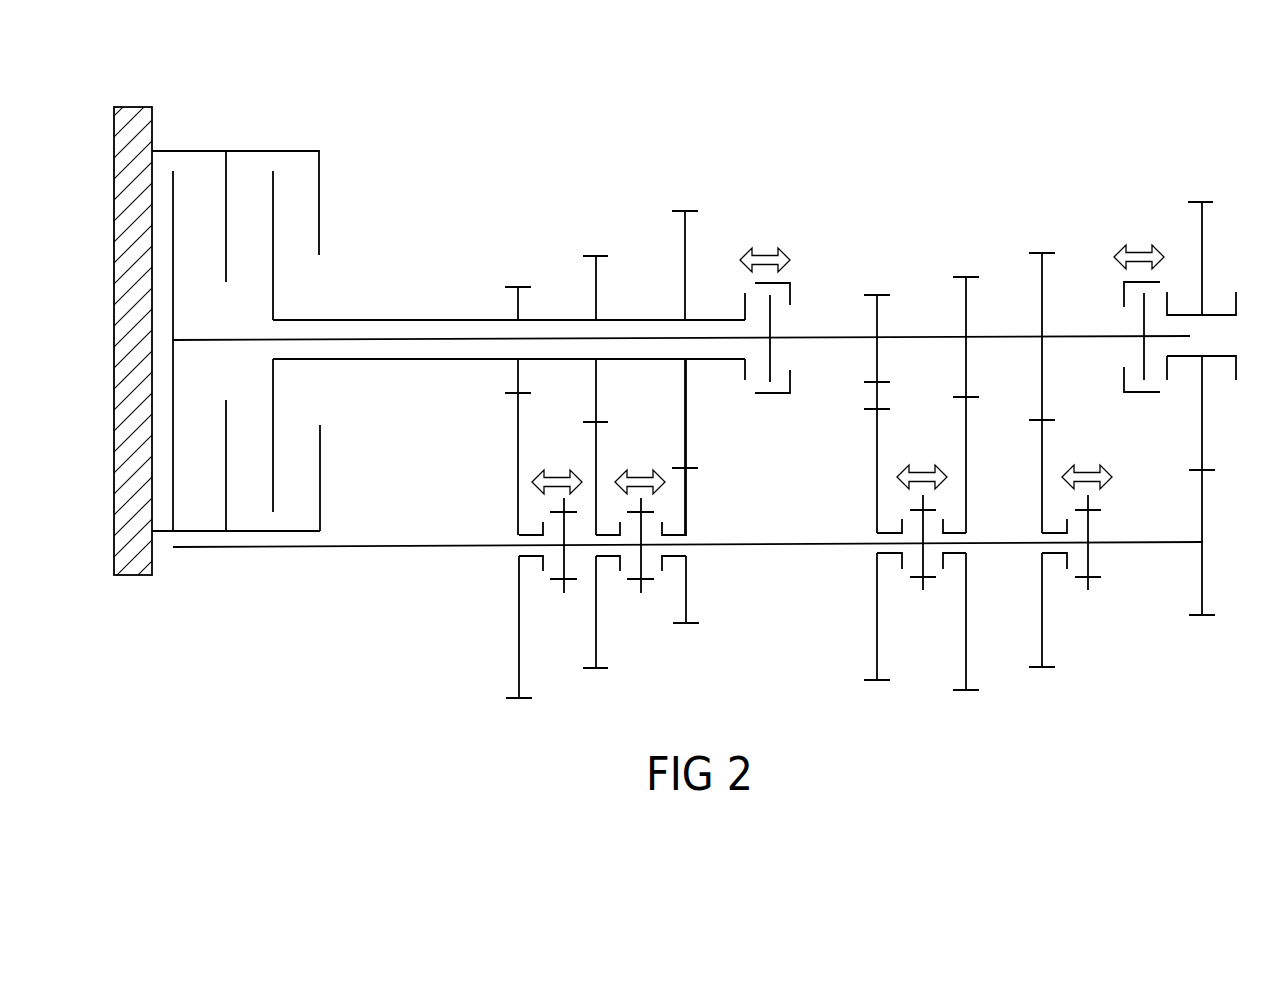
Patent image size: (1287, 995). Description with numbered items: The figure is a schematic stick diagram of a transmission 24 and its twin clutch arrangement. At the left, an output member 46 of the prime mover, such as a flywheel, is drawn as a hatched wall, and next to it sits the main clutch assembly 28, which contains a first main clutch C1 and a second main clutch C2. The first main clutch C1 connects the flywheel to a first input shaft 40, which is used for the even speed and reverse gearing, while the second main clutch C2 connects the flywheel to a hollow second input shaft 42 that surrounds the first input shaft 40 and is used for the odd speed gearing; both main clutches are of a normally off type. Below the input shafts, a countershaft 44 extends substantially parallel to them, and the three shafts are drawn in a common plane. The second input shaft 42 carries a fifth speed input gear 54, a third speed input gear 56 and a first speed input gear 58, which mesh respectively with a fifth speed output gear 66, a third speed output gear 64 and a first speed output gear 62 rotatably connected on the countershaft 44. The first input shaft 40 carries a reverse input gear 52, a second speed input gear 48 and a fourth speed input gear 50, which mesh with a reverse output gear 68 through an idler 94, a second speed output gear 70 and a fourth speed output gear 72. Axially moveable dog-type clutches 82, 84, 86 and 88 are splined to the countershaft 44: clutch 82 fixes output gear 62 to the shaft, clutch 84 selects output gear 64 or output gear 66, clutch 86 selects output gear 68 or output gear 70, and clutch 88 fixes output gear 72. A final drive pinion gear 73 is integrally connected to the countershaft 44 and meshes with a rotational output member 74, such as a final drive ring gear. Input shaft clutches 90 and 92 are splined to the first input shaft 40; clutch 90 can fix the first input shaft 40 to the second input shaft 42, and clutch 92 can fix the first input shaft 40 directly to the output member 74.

The transmission 24 is at (1003, 175).
The main clutch assembly 28 is at (262, 142).
The first input shaft 40 is at (403, 345).
The second input shaft 42 is at (362, 312).
The countershaft 44 is at (795, 535).
The output member 46 is at (128, 562).
The 2nd speed input gear 48 is at (964, 302).
The 4th speed input gear 50 is at (1040, 295).
The reverse input gear 52 is at (876, 315).
The 5th speed input gear 54 is at (682, 245).
The 3rd speed input gear 56 is at (592, 289).
The 1st speed input gear 58 is at (515, 303).
The 1st speed output gear 62 is at (518, 655).
The 3rd speed output gear 64 is at (600, 648).
The 5th speed output gear 66 is at (688, 592).
The reverse output gear 68 is at (877, 617).
The 2nd speed output gear 70 is at (966, 660).
The 4th speed output gear 72 is at (1042, 632).
The final drive pinion gear 73 is at (1203, 573).
The rotational output member 74 is at (1200, 224).
The clutch 82 is at (564, 625).
The clutch 84 is at (645, 605).
The clutch 86 is at (922, 600).
The clutch 88 is at (1088, 600).
The input shaft clutch 90 is at (762, 420).
The input shaft clutch 92 is at (1145, 405).
The idler 94 is at (878, 398).
The first main clutch C1 is at (177, 520).
The second main clutch C2 is at (277, 520).